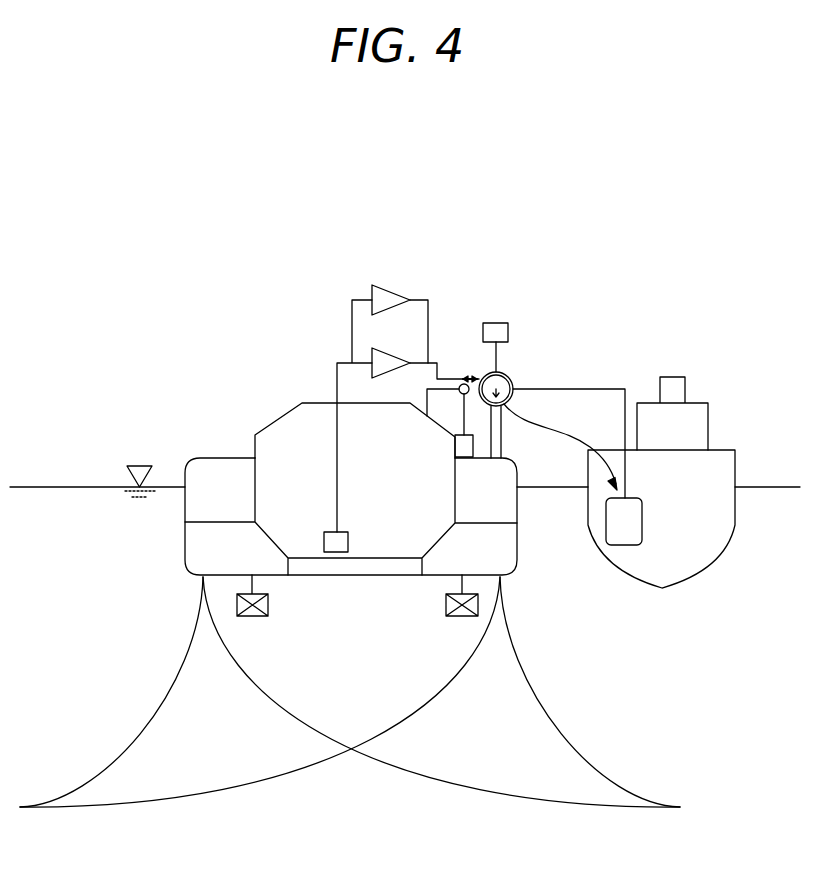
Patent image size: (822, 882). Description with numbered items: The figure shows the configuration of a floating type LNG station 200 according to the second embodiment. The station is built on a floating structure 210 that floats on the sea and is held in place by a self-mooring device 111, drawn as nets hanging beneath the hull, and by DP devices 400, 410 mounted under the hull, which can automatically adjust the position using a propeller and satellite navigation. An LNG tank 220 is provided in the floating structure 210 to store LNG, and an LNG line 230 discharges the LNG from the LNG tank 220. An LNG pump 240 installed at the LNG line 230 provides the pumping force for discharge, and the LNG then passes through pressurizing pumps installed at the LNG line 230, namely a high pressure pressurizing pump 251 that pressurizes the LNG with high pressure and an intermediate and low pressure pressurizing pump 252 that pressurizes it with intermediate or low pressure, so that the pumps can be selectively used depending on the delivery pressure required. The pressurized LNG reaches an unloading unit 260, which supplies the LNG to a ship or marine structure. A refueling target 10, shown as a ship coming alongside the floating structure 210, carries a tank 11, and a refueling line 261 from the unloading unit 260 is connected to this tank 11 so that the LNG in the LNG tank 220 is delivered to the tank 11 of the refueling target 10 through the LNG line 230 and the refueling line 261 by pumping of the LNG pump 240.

The floating type LNG station 200 is at (160, 268).
The floating structure 210 is at (185, 547).
The LNG tank 220 is at (296, 420).
The LNG line 230 is at (336, 392).
The LNG pump 240 is at (323, 540).
The high pressure pressurizing pump 251 is at (380, 348).
The intermediate and low pressure pressurizing pump 252 is at (396, 285).
The unloading unit 260 is at (512, 380).
The refueling line 261 is at (556, 433).
The DP device 400 is at (268, 605).
The DP device 410 is at (446, 605).
The self-mooring device 111 is at (160, 713).
The refueling target 10 is at (721, 437).
The tank 11 is at (627, 546).